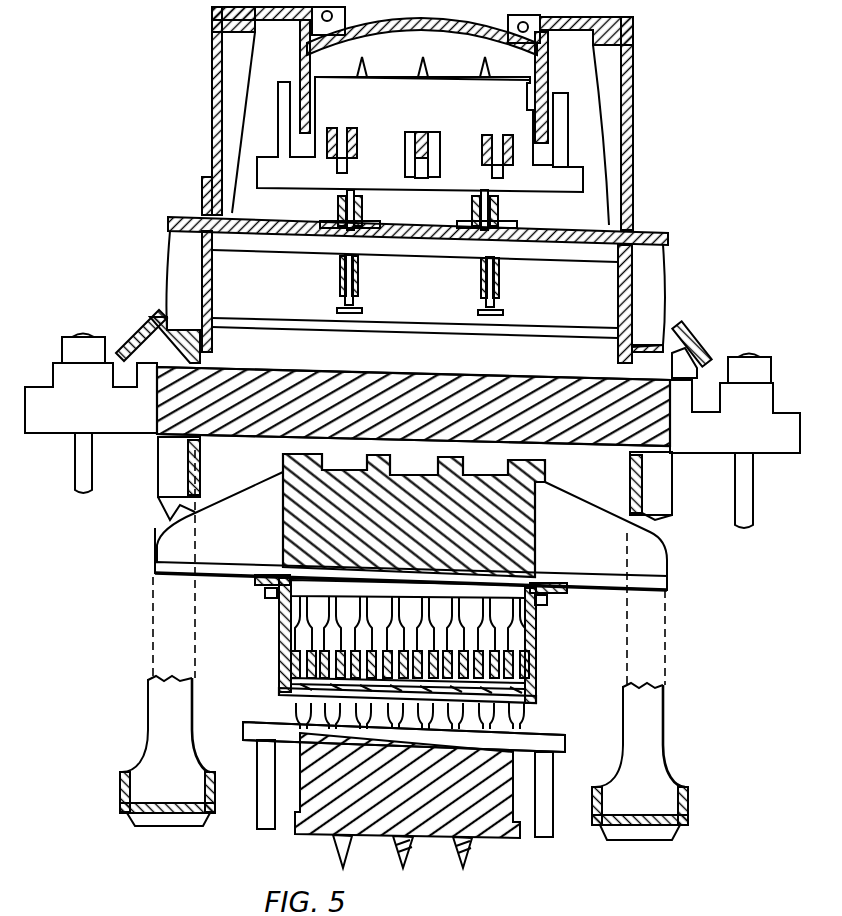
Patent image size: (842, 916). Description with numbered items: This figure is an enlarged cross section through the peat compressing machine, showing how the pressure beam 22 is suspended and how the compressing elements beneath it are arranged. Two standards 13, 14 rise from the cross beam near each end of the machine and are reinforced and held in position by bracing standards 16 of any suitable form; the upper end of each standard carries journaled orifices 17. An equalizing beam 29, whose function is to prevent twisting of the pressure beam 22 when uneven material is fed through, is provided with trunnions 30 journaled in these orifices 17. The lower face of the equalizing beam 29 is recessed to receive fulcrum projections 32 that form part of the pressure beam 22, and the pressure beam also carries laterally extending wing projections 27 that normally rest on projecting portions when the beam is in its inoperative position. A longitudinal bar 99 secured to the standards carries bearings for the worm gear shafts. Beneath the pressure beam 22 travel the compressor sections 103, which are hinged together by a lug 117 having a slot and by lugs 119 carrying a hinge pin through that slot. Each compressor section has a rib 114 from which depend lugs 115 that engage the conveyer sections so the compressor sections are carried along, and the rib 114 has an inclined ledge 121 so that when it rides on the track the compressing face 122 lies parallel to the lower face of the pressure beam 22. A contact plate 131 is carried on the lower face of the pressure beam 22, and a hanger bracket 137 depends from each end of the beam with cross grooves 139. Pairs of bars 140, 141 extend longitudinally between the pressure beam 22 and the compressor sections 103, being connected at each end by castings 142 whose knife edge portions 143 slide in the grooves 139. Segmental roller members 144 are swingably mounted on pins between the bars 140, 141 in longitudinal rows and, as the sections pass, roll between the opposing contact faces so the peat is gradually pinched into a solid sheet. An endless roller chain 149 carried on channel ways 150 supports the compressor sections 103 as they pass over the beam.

The standard 13 is at (148, 707).
The standard 14 is at (645, 740).
The bracing standards 16 is at (132, 338).
The journaled orifices 17 is at (160, 453).
The pressure beam 22 is at (520, 543).
The wing projections 27 is at (697, 558).
The equalizing beam 29 is at (527, 443).
The trunnions 30 is at (157, 410).
The fulcrum projections 32 is at (478, 452).
The longitudinal bar 99 is at (122, 803).
The compressor sections 103 is at (527, 860).
The rib 114 is at (580, 166).
The lugs 115 is at (568, 128).
The lug 117 is at (422, 131).
The lugs 119 is at (403, 143).
The ledge 121 is at (565, 750).
The compressing face 122 is at (430, 840).
The contact plate 131 is at (515, 580).
The hanger bracket 137 is at (537, 660).
The cross grooves 139 is at (290, 692).
The bar 140 is at (537, 655).
The bar 141 is at (523, 645).
The castings 142 is at (537, 673).
The knife edge portions 143 is at (297, 660).
The segmental roller members 144 is at (310, 622).
The endless roller chain 149 is at (497, 206).
The channel ways 150 is at (335, 203).